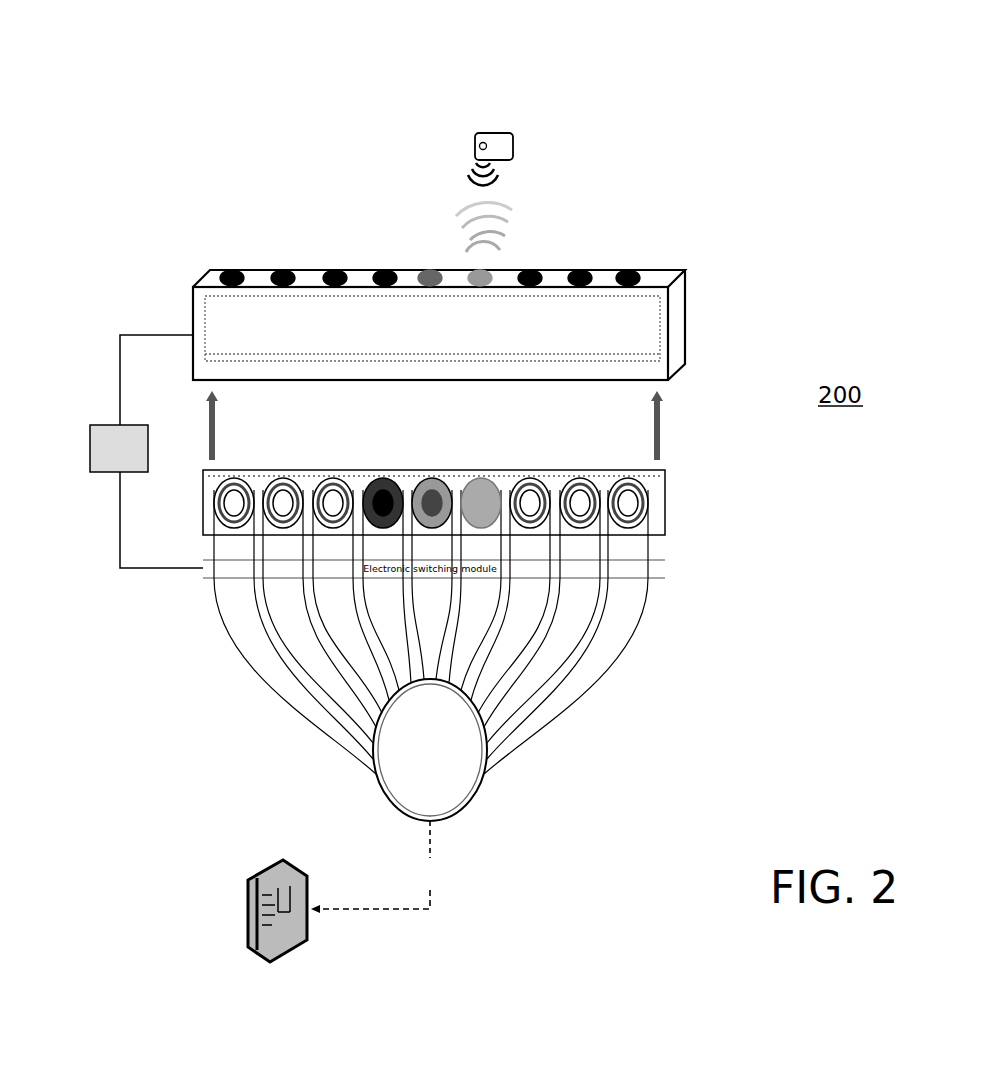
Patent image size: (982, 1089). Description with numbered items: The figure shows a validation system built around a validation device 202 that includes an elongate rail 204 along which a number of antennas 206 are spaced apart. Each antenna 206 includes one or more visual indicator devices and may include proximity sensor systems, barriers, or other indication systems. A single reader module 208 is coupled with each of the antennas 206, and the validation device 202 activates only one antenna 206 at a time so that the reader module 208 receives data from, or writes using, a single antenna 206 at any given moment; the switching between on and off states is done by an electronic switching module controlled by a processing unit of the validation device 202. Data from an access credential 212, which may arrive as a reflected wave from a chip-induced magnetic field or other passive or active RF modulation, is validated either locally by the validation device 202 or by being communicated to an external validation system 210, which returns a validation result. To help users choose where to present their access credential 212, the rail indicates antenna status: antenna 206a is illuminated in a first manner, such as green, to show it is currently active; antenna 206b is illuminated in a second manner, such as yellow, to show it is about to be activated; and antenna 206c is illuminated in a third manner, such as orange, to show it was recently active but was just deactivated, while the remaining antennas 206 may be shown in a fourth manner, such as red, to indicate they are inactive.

The validation device 202 is at (192, 318).
The elongate rail 204 is at (652, 268).
The antennas 206 is at (232, 268).
The antenna 206a is at (487, 293).
The antenna 206b is at (433, 293).
The antenna 206c is at (387, 293).
The reader module 208 is at (487, 775).
The external validation system 210 is at (248, 908).
The access credential 212 is at (490, 133).